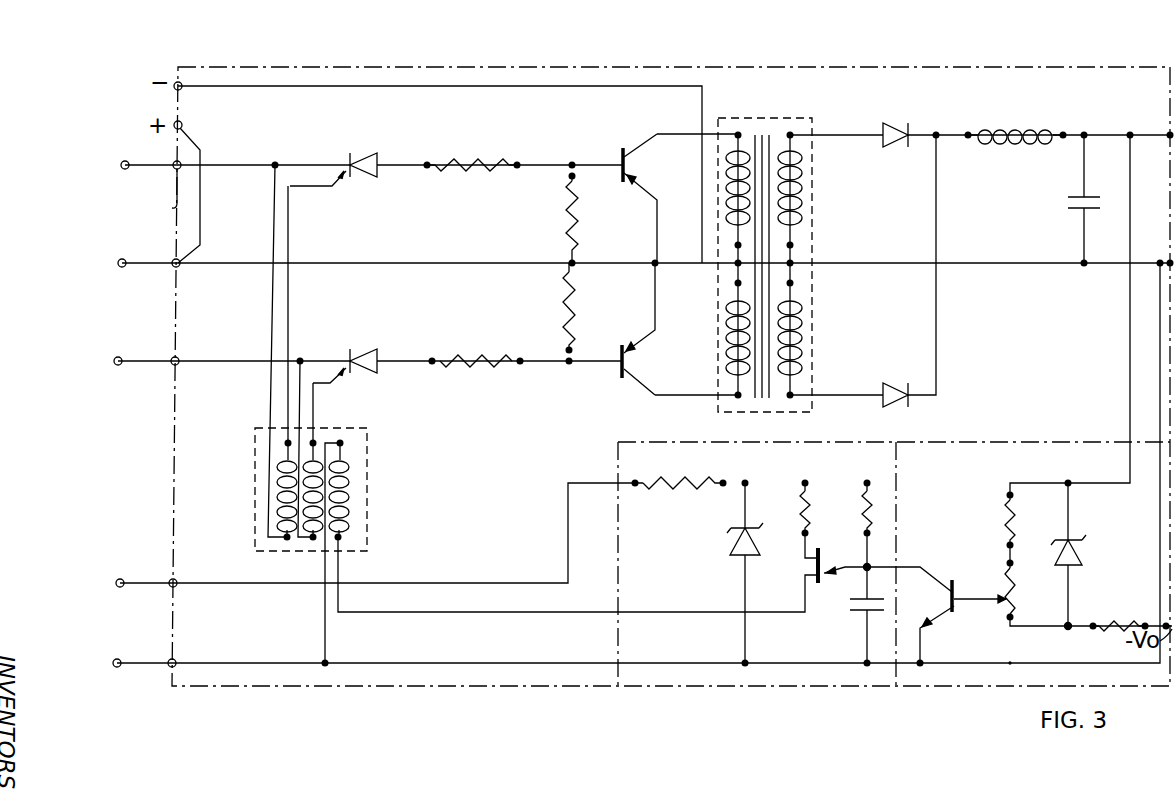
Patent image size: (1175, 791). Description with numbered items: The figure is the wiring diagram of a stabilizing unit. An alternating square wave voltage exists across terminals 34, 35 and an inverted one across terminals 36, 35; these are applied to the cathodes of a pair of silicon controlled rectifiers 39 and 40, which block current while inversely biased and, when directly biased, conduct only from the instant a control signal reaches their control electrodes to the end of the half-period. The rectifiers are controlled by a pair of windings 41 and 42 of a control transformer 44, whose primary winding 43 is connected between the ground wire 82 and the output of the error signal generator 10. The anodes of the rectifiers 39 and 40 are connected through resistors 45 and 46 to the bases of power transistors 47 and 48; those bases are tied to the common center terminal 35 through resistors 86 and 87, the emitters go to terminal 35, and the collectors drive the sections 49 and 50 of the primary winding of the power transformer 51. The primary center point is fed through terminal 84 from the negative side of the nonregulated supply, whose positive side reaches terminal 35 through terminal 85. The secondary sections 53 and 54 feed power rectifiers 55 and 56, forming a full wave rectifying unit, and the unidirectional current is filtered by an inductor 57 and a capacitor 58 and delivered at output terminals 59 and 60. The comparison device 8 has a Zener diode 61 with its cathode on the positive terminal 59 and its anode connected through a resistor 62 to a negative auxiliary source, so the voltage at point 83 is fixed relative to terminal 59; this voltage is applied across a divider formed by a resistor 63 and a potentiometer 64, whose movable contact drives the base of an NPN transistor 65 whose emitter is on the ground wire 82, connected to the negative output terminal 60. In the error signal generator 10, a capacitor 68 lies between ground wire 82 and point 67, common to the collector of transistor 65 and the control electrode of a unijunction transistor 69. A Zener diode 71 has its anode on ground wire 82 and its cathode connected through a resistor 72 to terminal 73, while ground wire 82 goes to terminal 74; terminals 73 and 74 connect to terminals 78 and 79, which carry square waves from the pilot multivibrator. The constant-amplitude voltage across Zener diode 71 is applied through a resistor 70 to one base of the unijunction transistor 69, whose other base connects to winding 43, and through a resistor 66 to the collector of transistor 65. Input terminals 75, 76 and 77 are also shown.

The comparison device 8 is at (932, 462).
The error signal generator 10 is at (800, 462).
The terminal 34 is at (166, 184).
The common center terminal 35 is at (163, 252).
The terminal 36 is at (161, 350).
The silicon controlled rectifier 39 is at (335, 156).
The silicon controlled rectifier 40 is at (347, 353).
The winding 41 is at (292, 541).
The winding 42 is at (318, 541).
The primary winding 43 is at (350, 518).
The control transformer 44 is at (326, 478).
The resistor 45 is at (472, 152).
The resistor 46 is at (476, 348).
The power transistor 47 is at (646, 198).
The power transistor 48 is at (644, 329).
The primary winding section 49 is at (720, 157).
The primary winding section 50 is at (718, 338).
The power transformer 51 is at (812, 230).
The secondary winding section 53 is at (802, 205).
The secondary winding section 54 is at (802, 372).
The power rectifier 55 is at (899, 119).
The power rectifier 56 is at (896, 379).
The inductor 57 is at (1015, 119).
The capacitor 58 is at (1065, 199).
The positive output terminal 59 is at (1156, 123).
The negative output terminal 60 is at (1156, 250).
The Zener diode 61 is at (1084, 554).
The resistor 62 is at (1119, 611).
The resistor 63 is at (996, 529).
The potentiometer 64 is at (1000, 596).
The NPN transistor 65 is at (910, 615).
The resistor 66 is at (853, 525).
The point 67 is at (881, 557).
The capacitor 68 is at (851, 615).
The unijunction transistor 69 is at (817, 565).
The resistor 70 is at (795, 520).
The Zener diode 71 is at (731, 573).
The resistor 72 is at (679, 470).
The terminal 73 is at (188, 570).
The terminal 74 is at (187, 650).
The terminal 75 is at (111, 165).
The terminal 76 is at (109, 263).
The terminal 77 is at (106, 359).
The terminal 78 is at (122, 570).
The terminal 79 is at (114, 650).
The ground wire 82 is at (1021, 652).
The point 83 is at (1064, 630).
The terminal 84 is at (191, 97).
The terminal 85 is at (196, 190).
The resistor 86 is at (554, 219).
The resistor 87 is at (551, 306).